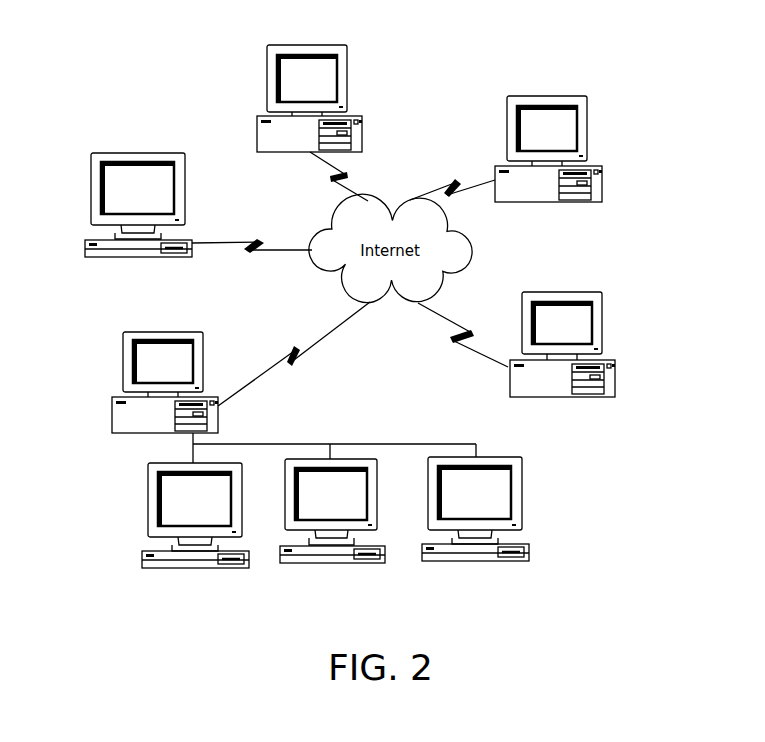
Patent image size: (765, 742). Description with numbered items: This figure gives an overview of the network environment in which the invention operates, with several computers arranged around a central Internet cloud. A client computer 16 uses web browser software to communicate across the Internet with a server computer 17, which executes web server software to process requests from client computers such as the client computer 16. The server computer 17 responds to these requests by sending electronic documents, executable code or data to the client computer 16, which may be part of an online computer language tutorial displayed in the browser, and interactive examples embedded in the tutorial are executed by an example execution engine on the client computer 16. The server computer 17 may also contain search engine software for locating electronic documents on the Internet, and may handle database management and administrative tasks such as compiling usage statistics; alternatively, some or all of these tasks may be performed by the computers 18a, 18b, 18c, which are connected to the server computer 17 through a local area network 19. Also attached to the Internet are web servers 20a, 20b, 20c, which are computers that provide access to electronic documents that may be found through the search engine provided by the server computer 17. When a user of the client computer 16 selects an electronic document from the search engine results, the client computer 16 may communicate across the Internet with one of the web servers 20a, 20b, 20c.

The client computer 16 is at (107, 202).
The server computer 17 is at (125, 373).
The computer 18a is at (150, 510).
The computer 18b is at (342, 553).
The computer 18c is at (523, 490).
The local area network 19 is at (367, 443).
The web server 20a is at (340, 85).
The web server 20b is at (513, 195).
The web server 20c is at (540, 387).